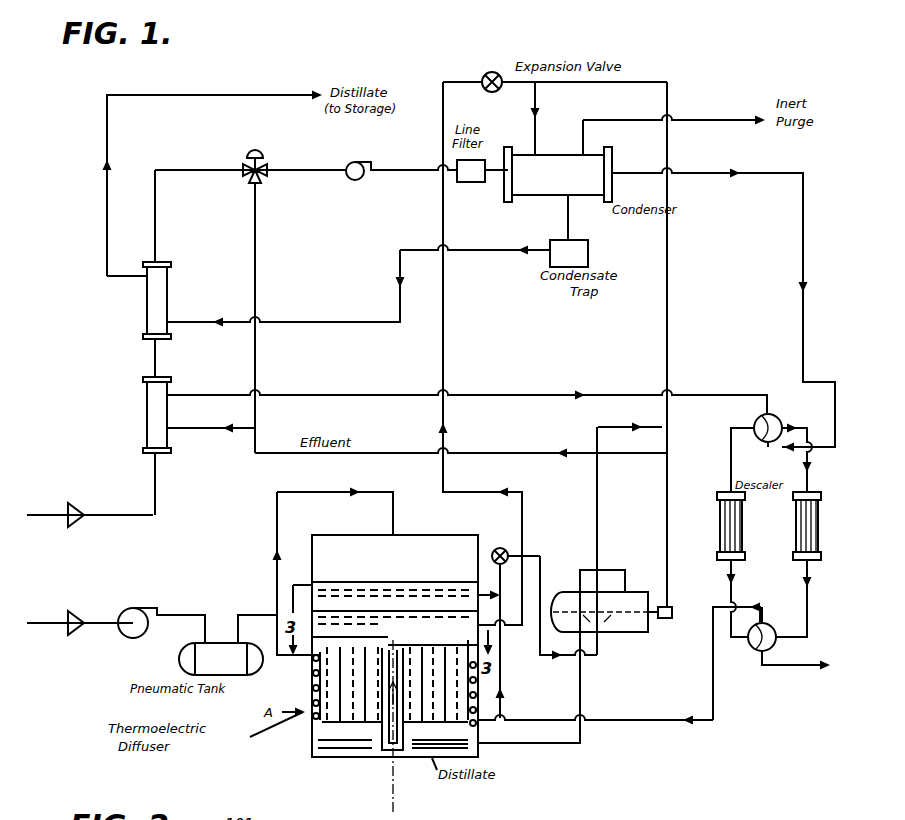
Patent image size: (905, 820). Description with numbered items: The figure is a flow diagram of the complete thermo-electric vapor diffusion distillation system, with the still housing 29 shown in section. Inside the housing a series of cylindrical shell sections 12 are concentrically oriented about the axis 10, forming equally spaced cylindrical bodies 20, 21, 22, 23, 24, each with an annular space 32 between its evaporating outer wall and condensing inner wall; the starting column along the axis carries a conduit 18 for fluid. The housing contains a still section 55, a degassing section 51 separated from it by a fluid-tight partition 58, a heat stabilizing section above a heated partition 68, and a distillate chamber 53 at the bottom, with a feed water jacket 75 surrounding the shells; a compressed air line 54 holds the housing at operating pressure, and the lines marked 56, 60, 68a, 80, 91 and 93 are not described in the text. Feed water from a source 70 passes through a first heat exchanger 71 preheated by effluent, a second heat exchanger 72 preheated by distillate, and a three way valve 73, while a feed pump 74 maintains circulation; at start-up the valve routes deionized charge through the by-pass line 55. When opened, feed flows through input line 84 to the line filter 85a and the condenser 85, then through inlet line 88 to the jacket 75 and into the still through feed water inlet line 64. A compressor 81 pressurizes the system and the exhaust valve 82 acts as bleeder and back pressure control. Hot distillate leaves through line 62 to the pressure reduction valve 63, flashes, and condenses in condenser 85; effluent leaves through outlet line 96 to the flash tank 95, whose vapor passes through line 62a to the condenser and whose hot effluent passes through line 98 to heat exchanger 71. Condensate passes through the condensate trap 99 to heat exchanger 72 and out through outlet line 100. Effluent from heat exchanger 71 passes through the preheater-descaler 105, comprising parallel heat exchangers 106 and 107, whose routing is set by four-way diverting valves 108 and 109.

The axis 10 is at (393, 800).
The cylindrical shell sections 12 is at (316, 718).
The conduit 18 is at (388, 732).
The cylindrical body 20 is at (395, 634).
The cylindrical body 21 is at (378, 647).
The cylindrical body 22 is at (364, 646).
The cylindrical body 23 is at (340, 647).
The cylindrical body 24 is at (327, 646).
The still housing 29 is at (312, 757).
The annular space 32 is at (395, 600).
The degassing section 51 is at (395, 624).
The distillate chamber 53 is at (440, 735).
The compressed air line 54 is at (260, 611).
The still section 55 is at (256, 360).
The effluent line 56 is at (366, 393).
The partition 58 is at (450, 610).
The heat stabilizer chamber 60 is at (395, 574).
The distillate outlet line 62 is at (522, 628).
The line 62a is at (597, 490).
The pressure reduction valve 63 is at (485, 76).
The feed water inlet line 64 is at (274, 530).
The partition 68 is at (356, 581).
The return line 68a is at (714, 712).
The feed water source 70 is at (72, 528).
The first heat exchanger 71 is at (170, 418).
The second preheating heat exchanger 72 is at (170, 302).
The three way valve 73 is at (264, 163).
The feed pump 74 is at (361, 163).
The feed water jacket 75 is at (310, 674).
The distillate pool 80 is at (338, 758).
The compressor 81 is at (119, 639).
The exhaust valve 82 is at (501, 548).
The input line 84 is at (401, 168).
The condenser 85 is at (528, 196).
The line filter 85a is at (478, 150).
The inlet line 88 is at (708, 170).
The vapor line to tank 91 is at (542, 570).
The inert purge line 93 is at (704, 119).
The flash tank 95 is at (635, 589).
The outlet line 96 is at (560, 746).
The line 98 is at (669, 568).
The condensate trap 99 is at (590, 246).
The outlet line 100 is at (234, 99).
The preheater-descaler unit 105 is at (740, 470).
The heat exchanger 106 is at (718, 505).
The heat exchanger 107 is at (820, 494).
The four-way diverting valve 108 is at (778, 416).
The four-way diverting valve 109 is at (753, 649).